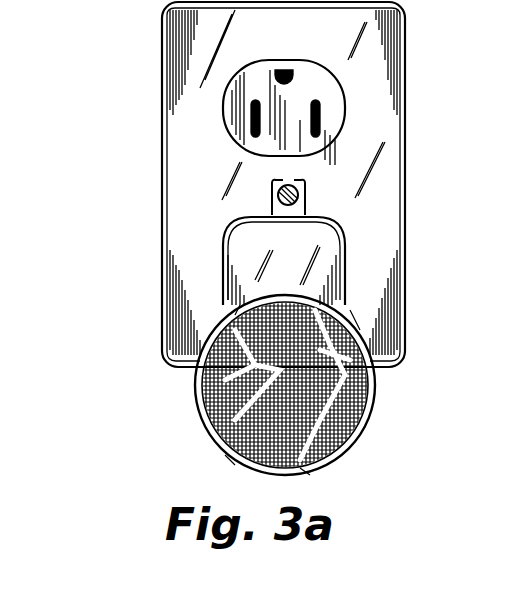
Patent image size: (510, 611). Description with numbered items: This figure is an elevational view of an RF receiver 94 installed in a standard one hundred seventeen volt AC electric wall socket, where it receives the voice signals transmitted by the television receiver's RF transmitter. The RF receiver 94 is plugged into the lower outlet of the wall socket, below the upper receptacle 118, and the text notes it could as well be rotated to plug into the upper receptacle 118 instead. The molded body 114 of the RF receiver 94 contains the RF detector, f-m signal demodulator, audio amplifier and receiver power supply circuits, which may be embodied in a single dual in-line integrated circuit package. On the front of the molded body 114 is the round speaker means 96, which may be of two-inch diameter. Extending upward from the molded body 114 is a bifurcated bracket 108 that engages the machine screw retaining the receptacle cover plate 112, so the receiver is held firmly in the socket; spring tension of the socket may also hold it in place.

The RF receiver 94 is at (162, 303).
The speaker means 96 is at (205, 410).
The bifurcated bracket 108 is at (305, 188).
The receptacle cover plate 112 is at (160, 82).
The molded body 114 is at (247, 257).
The upper receptacle 118 is at (345, 88).